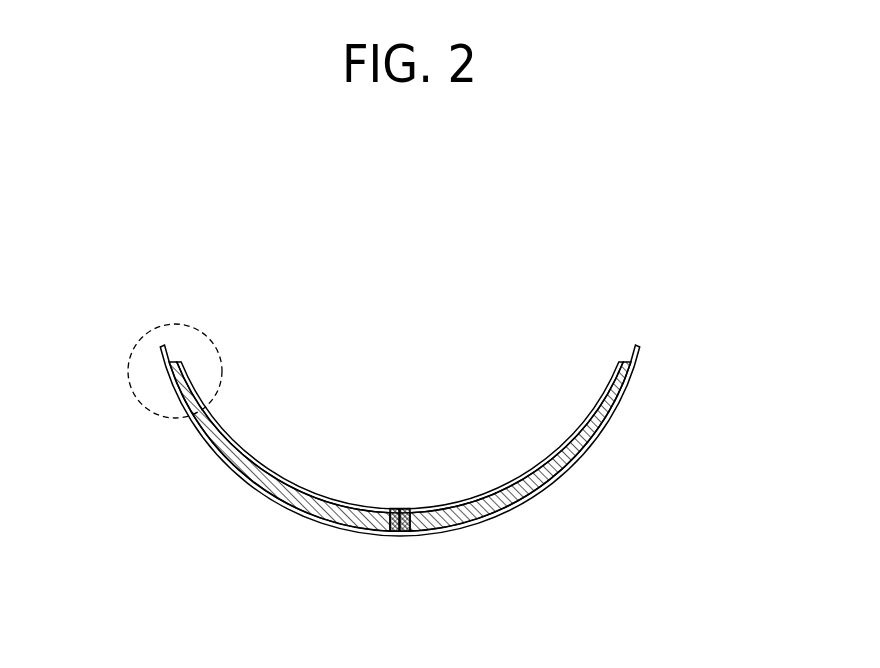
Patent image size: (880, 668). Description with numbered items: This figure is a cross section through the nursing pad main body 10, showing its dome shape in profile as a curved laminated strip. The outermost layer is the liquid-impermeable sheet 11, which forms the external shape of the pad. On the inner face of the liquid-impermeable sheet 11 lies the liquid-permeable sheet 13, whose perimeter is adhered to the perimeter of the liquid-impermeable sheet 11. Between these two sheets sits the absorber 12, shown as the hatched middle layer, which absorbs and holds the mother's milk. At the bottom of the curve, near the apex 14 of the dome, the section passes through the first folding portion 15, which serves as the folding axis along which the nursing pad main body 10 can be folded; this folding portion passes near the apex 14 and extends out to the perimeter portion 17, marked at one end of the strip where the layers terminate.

The nursing pad main body 10 is at (481, 282).
The liquid-impermeable sheet 11 is at (632, 378).
The absorber 12 is at (618, 411).
The liquid-permeable sheet 13 is at (612, 381).
The apex 14 is at (410, 551).
The first folding portion 15 is at (398, 538).
The perimeter portion 17 is at (141, 309).